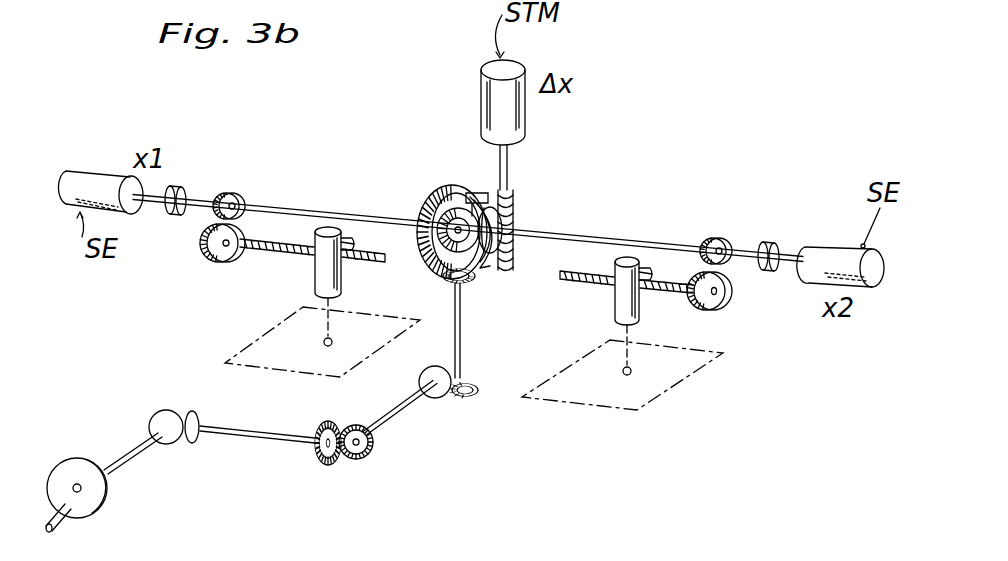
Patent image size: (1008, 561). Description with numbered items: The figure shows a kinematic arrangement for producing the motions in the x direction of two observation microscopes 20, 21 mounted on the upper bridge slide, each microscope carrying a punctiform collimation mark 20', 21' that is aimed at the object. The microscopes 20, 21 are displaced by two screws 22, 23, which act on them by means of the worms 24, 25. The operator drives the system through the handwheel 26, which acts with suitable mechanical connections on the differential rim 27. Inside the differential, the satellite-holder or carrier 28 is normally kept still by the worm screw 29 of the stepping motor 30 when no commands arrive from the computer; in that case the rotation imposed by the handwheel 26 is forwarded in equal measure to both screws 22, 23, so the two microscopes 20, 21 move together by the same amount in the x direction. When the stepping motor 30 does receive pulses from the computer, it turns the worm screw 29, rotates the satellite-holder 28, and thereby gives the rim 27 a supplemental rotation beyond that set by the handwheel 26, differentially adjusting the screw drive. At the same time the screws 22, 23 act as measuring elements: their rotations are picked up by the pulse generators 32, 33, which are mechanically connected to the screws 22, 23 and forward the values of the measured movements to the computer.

The observation microscope 20 is at (622, 333).
The punctiform collimation mark 20' is at (668, 304).
The observation microscope 21 is at (322, 302).
The punctiform collimation mark 21' is at (368, 270).
The screw 22 is at (575, 282).
The screw 23 is at (265, 254).
The worm 24 is at (648, 268).
The worm 25 is at (350, 238).
The handwheel 26 is at (98, 490).
The differential rim 27 is at (445, 184).
The satellite-holder 28 is at (486, 189).
The worm screw 29 is at (513, 204).
The stepping motor 30 is at (513, 117).
The pulse generator 32 is at (823, 247).
The pulse generator 33 is at (93, 174).